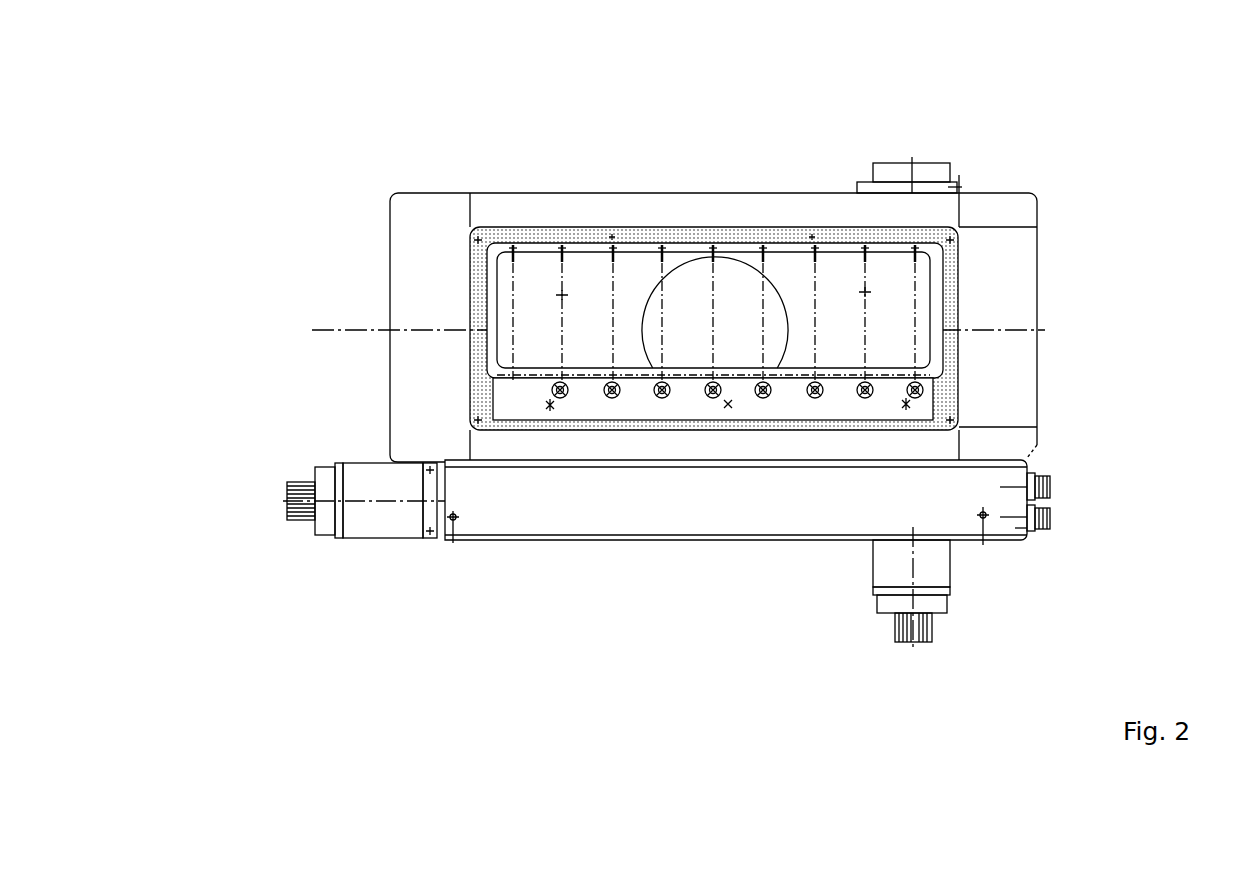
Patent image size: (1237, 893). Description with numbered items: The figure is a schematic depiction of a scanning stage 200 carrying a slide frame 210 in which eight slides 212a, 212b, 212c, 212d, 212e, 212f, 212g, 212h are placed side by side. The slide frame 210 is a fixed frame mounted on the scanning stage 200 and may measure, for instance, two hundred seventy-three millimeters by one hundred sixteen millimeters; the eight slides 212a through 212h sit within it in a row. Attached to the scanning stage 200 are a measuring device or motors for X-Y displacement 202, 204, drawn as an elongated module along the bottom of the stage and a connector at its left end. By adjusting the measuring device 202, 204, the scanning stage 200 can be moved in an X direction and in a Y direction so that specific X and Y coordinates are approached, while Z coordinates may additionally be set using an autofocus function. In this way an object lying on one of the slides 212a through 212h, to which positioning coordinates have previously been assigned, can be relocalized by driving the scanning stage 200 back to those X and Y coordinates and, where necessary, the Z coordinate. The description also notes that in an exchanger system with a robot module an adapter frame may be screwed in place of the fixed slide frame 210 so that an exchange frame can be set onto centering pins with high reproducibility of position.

The scanning stage 200 is at (420, 145).
The measuring device or motor for X-Y displacement 202 is at (1002, 600).
The measuring device or motor for X-Y displacement 204 is at (260, 443).
The slide frame 210 is at (603, 230).
The slide 212a is at (533, 350).
The slide 212b is at (588, 350).
The slide 212c is at (628, 350).
The slide 212d is at (685, 350).
The slide 212e is at (740, 350).
The slide 212f is at (793, 350).
The slide 212g is at (837, 350).
The slide 212h is at (880, 350).